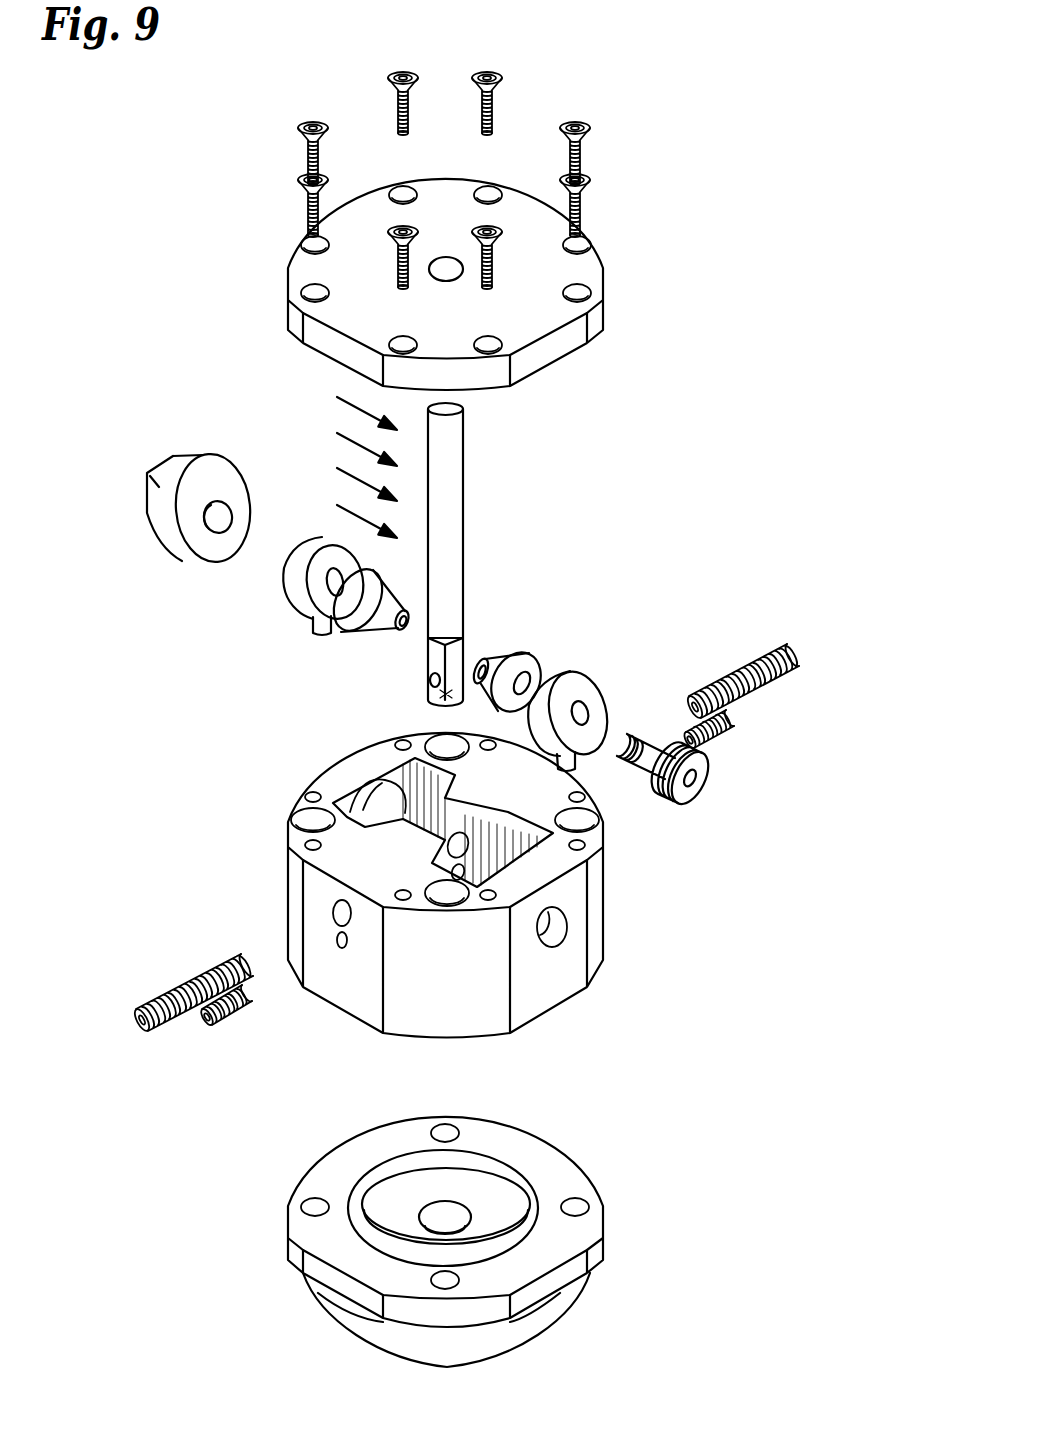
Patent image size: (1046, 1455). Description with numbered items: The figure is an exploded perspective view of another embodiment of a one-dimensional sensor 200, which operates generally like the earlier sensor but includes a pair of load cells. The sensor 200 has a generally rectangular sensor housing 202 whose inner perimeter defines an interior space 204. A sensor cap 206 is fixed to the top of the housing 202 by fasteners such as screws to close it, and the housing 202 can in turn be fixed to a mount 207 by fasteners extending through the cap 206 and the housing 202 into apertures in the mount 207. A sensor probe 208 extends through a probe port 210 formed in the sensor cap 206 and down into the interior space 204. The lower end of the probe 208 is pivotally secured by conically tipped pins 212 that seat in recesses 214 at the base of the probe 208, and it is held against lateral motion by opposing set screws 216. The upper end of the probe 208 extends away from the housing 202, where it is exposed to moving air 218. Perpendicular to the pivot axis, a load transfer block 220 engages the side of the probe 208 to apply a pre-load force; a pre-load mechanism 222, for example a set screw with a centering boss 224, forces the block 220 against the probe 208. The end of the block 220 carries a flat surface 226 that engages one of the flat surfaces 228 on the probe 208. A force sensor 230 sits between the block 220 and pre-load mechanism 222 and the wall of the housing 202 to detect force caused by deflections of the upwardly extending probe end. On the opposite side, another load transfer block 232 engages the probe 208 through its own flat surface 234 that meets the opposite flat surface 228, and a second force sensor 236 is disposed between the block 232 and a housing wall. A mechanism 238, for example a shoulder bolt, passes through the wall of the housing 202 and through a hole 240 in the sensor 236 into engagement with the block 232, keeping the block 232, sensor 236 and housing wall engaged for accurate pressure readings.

The one-dimensional sensor 200 is at (758, 962).
The sensor housing 202 is at (438, 885).
The interior space 204 is at (513, 855).
The sensor cap 206 is at (483, 231).
The mount 207 is at (580, 1150).
The sensor probe 208 is at (439, 568).
The probe port 210 is at (446, 265).
The conically tipped pins 212 is at (732, 724).
The recesses 214 is at (432, 693).
The set screws 216 is at (795, 648).
The moving air 218 is at (335, 400).
The load transfer block 220 is at (331, 621).
The pre-load mechanism 222 is at (173, 503).
The centering boss 224 is at (222, 535).
The flat surface 226 is at (405, 630).
The flat surfaces 228 is at (430, 678).
The force sensor 230 is at (288, 597).
The load transfer block 232 is at (528, 682).
The flat surface 234 is at (545, 661).
The second force sensor 236 is at (618, 702).
The mechanism 238 is at (705, 790).
The hole 240 is at (588, 713).